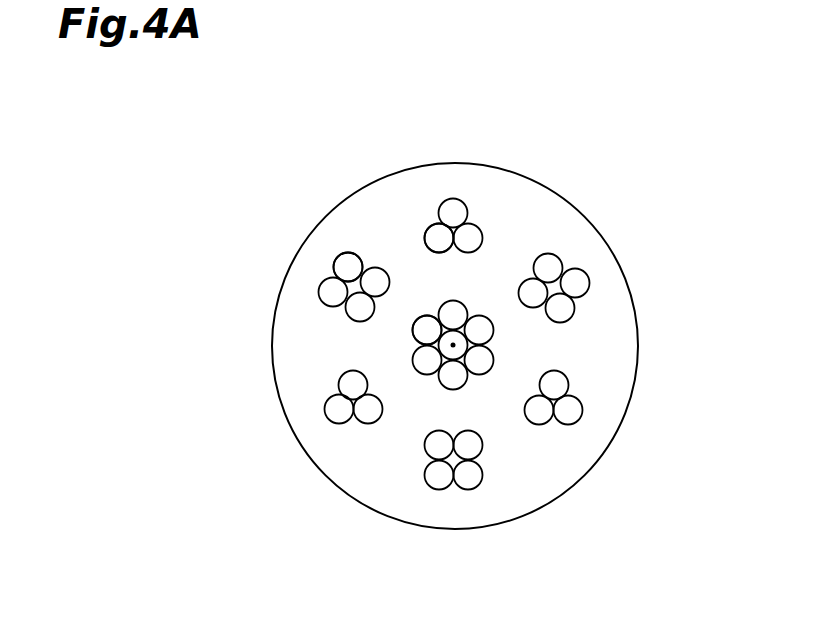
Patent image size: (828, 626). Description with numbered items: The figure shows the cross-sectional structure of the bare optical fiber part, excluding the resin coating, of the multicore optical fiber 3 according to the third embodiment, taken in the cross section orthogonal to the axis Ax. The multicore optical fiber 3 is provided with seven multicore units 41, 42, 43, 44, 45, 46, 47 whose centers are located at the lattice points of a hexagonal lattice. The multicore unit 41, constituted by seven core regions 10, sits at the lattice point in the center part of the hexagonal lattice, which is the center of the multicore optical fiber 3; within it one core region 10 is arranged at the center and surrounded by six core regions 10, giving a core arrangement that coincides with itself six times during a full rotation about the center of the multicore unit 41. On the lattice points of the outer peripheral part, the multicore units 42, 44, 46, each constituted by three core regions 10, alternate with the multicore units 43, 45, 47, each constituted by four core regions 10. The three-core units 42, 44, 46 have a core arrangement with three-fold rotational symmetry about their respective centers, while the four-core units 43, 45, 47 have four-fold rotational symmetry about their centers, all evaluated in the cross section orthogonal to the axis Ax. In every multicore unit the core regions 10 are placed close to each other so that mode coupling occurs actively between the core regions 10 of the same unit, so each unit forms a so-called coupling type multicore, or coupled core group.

The multicore optical fiber 3 is at (602, 137).
The core region 10 is at (430, 327).
The multicore unit 41 is at (411, 330).
The multicore unit 42 is at (335, 430).
The multicore unit 43 is at (335, 250).
The multicore unit 44 is at (456, 193).
The multicore unit 45 is at (561, 246).
The multicore unit 46 is at (574, 432).
The multicore unit 47 is at (438, 494).
The axis Ax is at (453, 345).